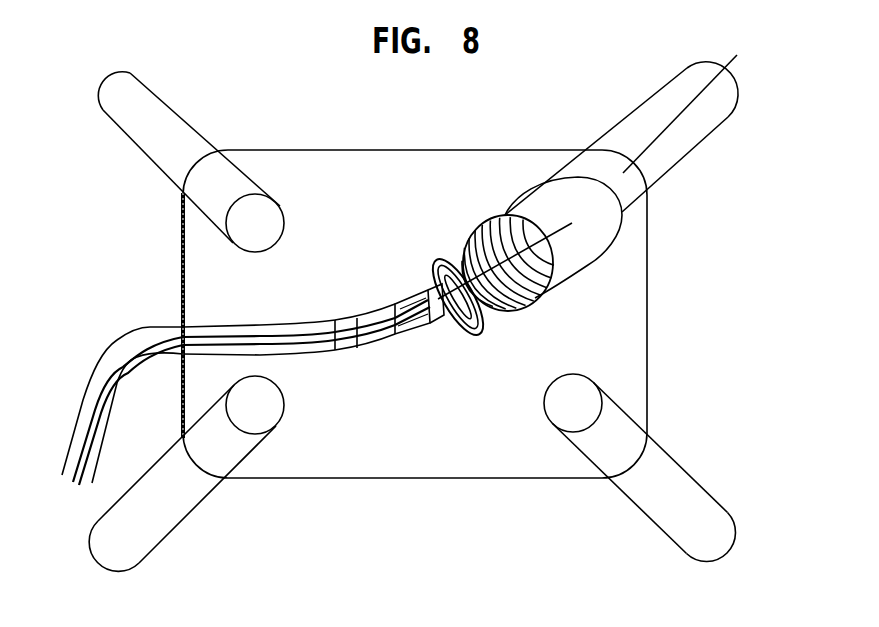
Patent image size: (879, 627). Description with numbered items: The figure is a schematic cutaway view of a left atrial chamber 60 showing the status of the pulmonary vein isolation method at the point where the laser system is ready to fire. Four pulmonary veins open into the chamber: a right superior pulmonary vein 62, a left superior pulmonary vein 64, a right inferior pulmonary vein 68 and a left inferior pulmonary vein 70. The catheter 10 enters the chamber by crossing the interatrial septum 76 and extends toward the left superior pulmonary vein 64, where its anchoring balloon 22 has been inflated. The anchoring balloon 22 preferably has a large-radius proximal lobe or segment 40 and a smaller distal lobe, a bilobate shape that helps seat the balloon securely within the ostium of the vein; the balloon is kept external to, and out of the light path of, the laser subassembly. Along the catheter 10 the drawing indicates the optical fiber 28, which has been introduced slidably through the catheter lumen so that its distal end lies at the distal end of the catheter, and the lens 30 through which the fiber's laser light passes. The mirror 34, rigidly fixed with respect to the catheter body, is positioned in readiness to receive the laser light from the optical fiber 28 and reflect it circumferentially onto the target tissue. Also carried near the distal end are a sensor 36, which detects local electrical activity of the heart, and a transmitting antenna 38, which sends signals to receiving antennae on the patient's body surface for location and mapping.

The catheter 10 is at (80, 417).
The anchoring balloon 22 is at (583, 253).
The optical fiber 28 is at (270, 340).
The lens 30 is at (446, 336).
The mirror 34 is at (444, 262).
The sensor 36 is at (410, 300).
The transmitting antenna 38 is at (342, 320).
The proximal lobe or segment 40 is at (508, 312).
The left atrial chamber 60 is at (415, 150).
The right superior pulmonary vein 62 is at (176, 100).
The left superior pulmonary vein 64 is at (707, 133).
The right inferior pulmonary vein 68 is at (198, 506).
The left inferior pulmonary vein 70 is at (680, 467).
The interatrial septum 76 is at (181, 248).